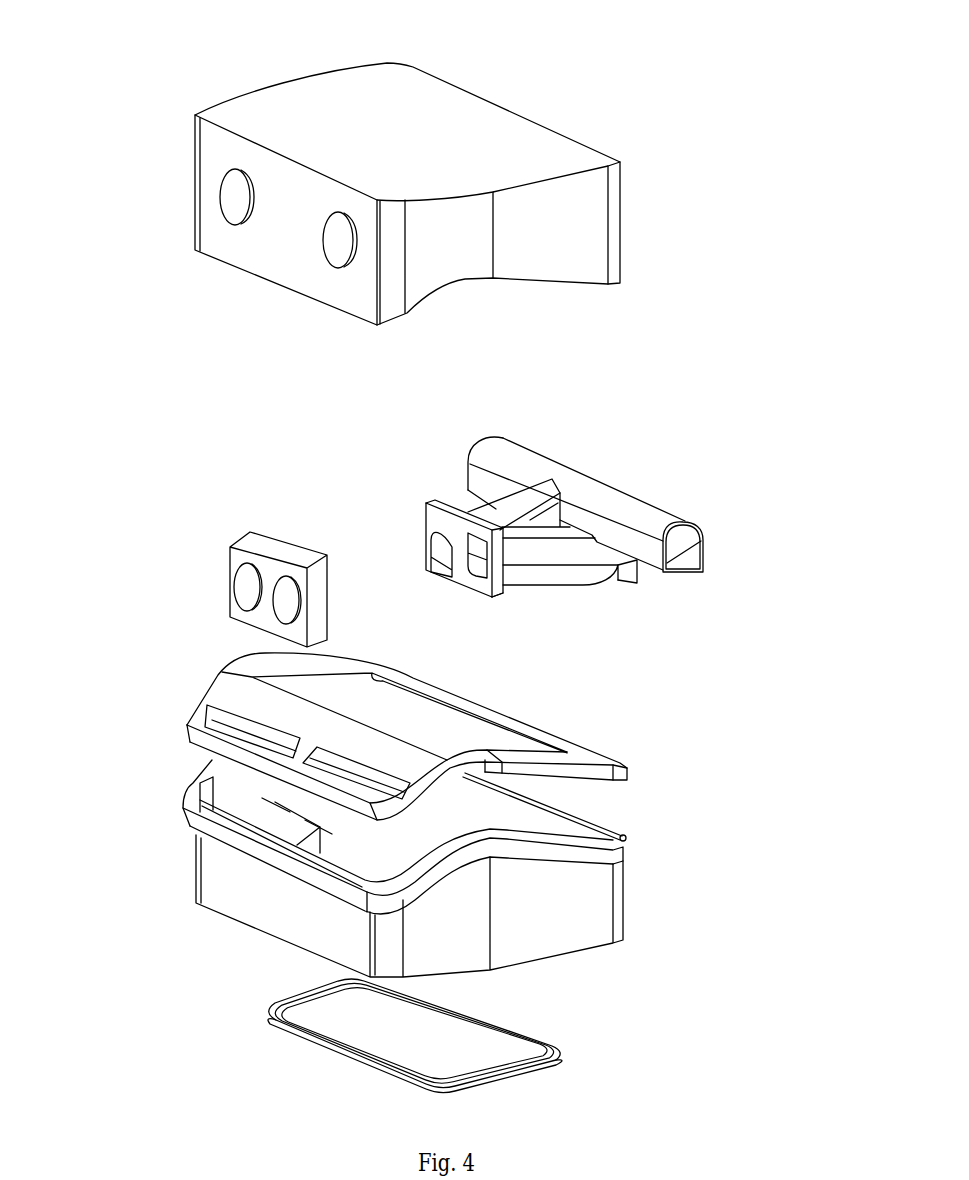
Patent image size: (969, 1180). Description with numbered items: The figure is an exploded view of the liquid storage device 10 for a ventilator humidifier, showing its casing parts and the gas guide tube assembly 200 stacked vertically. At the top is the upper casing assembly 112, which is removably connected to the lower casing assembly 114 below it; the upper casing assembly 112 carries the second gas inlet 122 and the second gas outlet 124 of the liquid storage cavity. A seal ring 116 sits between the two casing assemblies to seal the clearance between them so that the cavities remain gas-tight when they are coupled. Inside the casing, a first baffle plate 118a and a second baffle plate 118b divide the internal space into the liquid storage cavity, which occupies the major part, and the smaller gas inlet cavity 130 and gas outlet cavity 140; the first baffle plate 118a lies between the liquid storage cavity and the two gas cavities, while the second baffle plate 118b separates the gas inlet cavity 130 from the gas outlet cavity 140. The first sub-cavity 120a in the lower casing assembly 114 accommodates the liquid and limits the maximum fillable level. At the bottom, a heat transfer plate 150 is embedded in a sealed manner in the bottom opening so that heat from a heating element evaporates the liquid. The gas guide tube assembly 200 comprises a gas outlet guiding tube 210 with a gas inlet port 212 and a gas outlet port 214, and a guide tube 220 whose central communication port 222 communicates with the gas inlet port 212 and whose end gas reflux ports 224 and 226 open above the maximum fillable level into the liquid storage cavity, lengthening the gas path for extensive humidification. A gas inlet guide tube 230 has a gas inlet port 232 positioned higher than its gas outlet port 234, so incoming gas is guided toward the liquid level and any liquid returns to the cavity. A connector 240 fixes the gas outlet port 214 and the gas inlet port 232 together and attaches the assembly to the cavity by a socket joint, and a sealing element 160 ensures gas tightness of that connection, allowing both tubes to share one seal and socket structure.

The liquid storage device 10 is at (610, 37).
The upper casing assembly 112 is at (223, 148).
The second gas outlet 124 is at (232, 197).
The second gas inlet 122 is at (342, 245).
The sealing element 160 is at (270, 568).
The gas guide tube assembly 200 is at (603, 393).
The gas reflux port 226 is at (494, 450).
The gas inlet port 212 is at (552, 486).
The communication port 222 is at (560, 491).
The guide tube 220 is at (611, 474).
The gas reflux port 224 is at (683, 545).
The gas outlet guiding tube 210 is at (446, 554).
The gas outlet port 214 is at (438, 552).
The gas inlet port 232 is at (482, 570).
The connector 240 is at (498, 585).
The gas inlet guide tube 230 is at (553, 573).
The gas outlet port 234 is at (632, 578).
The seal ring 116 is at (225, 693).
The lower casing assembly 114 is at (396, 859).
The gas inlet cavity 130 is at (373, 867).
The first sub-cavity 120a is at (523, 822).
The gas outlet cavity 140 is at (228, 805).
The first baffle plate 118a is at (277, 805).
The second baffle plate 118b is at (318, 828).
The heat transfer plate 150 is at (317, 1017).